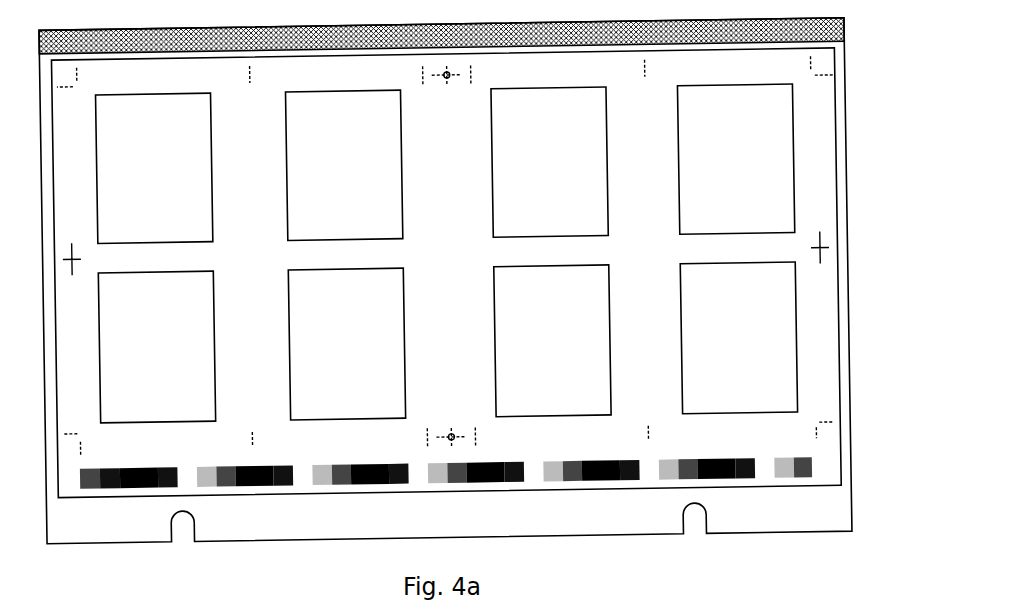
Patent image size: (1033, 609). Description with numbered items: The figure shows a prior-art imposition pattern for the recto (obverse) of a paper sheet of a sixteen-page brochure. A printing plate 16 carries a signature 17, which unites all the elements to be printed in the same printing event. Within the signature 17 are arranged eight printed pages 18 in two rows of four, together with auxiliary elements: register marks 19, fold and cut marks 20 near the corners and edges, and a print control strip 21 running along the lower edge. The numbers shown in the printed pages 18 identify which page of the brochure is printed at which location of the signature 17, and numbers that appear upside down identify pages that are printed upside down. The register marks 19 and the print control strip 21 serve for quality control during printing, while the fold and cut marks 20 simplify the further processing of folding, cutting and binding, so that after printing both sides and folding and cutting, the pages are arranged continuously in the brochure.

The printing plate 16 is at (850, 60).
The signature 17 is at (838, 112).
The printed pages 18 is at (770, 195).
The register marks 19 is at (823, 240).
The fold and cut marks 20 is at (822, 418).
The print control strips 21 is at (812, 468).